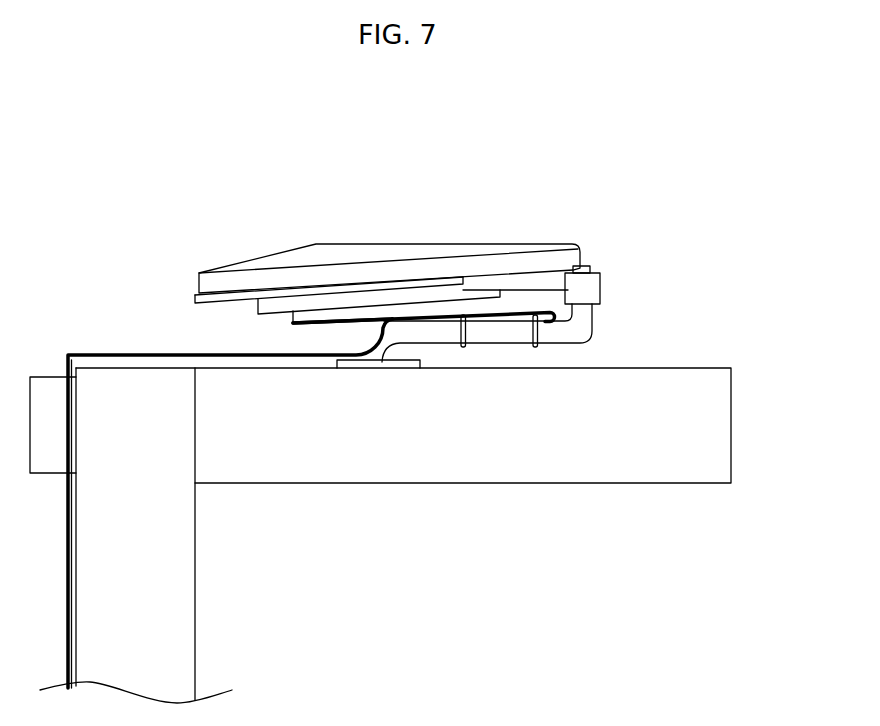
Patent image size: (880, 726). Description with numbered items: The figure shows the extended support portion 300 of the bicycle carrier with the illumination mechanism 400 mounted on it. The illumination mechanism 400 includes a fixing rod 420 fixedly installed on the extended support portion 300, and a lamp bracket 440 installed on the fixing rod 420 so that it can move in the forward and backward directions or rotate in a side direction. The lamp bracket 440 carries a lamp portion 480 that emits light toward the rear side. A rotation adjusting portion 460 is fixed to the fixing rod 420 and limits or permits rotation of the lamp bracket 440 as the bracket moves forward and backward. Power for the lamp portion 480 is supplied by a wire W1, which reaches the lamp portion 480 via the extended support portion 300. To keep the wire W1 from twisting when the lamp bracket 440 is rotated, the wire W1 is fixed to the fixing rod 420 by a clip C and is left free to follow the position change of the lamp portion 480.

The extended support portion 300 is at (175, 593).
The illumination mechanism 400 is at (415, 384).
The lamp portion 480 is at (360, 272).
The wire W1 is at (492, 308).
The rotation adjusting portion 460 is at (587, 265).
The lamp bracket 440 is at (583, 291).
The fixing rod 420 is at (573, 332).
The clip C is at (535, 348).